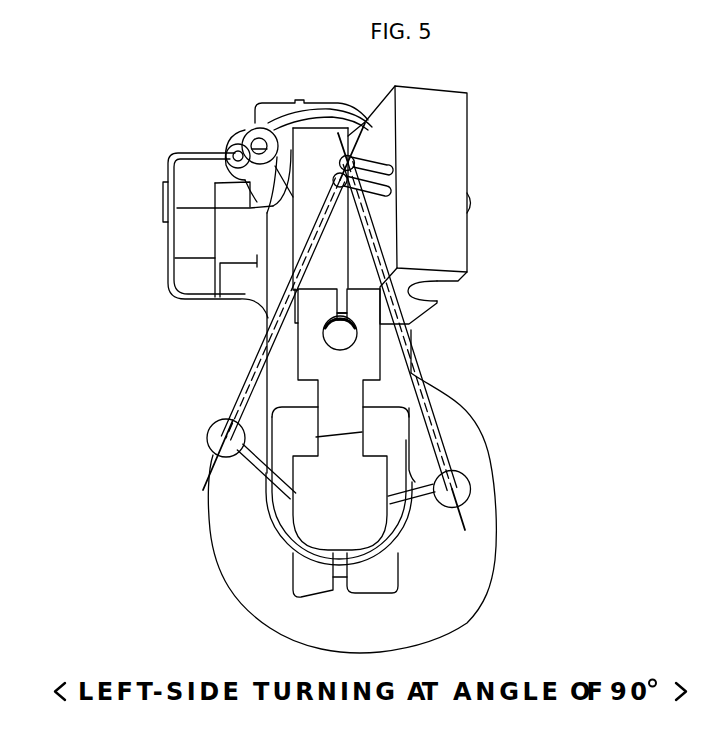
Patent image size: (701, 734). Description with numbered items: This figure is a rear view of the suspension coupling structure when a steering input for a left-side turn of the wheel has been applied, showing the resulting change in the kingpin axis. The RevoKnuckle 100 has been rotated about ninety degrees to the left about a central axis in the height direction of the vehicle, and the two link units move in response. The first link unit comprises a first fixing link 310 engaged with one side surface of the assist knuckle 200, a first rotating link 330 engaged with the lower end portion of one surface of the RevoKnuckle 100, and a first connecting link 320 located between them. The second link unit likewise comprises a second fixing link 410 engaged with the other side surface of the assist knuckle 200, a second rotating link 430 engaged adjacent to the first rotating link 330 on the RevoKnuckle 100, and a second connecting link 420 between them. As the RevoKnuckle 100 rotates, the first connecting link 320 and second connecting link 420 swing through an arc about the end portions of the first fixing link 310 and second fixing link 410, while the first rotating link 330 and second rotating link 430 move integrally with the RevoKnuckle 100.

The RevoKnuckle 100 is at (452, 172).
The assist knuckle 200 is at (392, 428).
The first fixing link 310 is at (266, 457).
The first connecting link 320 is at (250, 373).
The first rotating link 330 is at (375, 193).
The second fixing link 410 is at (415, 482).
The second connecting link 420 is at (410, 340).
The second rotating link 430 is at (373, 166).